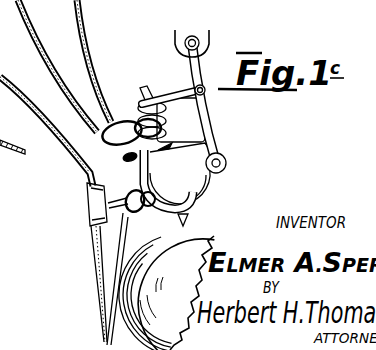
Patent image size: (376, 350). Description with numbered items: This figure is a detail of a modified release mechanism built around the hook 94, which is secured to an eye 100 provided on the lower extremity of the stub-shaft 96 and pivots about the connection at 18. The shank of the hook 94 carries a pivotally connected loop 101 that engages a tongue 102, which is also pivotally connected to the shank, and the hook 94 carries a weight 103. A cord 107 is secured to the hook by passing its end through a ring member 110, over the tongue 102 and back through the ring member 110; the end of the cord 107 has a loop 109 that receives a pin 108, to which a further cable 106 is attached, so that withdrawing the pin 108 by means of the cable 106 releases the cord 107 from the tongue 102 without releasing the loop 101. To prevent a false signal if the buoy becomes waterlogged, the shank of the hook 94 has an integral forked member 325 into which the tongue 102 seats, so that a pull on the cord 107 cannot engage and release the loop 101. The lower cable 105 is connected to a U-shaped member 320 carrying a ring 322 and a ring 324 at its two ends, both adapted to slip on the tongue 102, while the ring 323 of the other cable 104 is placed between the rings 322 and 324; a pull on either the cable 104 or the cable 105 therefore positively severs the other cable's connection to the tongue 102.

The pivot 18 is at (194, 28).
The hook 94 is at (207, 112).
The stub-shaft 96 is at (211, 42).
The eye 100 is at (176, 40).
The loop 101 is at (172, 92).
The tongue 102 is at (153, 170).
The weight 103 is at (166, 293).
The cable 104 is at (86, 47).
The lower cable 105 is at (41, 62).
The cable 106 is at (21, 100).
The cord 107 is at (103, 320).
The pin 108 is at (87, 208).
The loop 109 is at (87, 284).
The ring member 110 is at (138, 212).
The U-shaped member 320 is at (125, 141).
The ring 322 is at (165, 108).
The ring 323 is at (165, 121).
The ring 324 is at (165, 133).
The forked member 325 is at (180, 154).